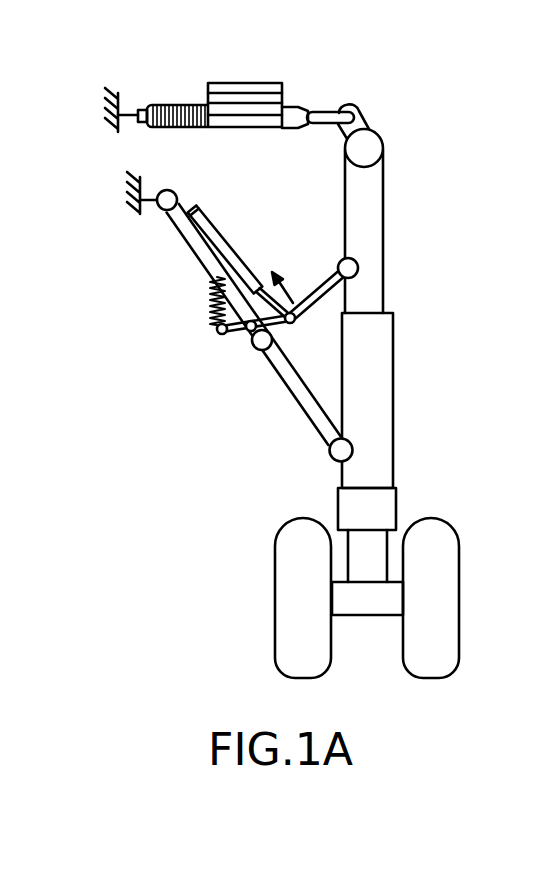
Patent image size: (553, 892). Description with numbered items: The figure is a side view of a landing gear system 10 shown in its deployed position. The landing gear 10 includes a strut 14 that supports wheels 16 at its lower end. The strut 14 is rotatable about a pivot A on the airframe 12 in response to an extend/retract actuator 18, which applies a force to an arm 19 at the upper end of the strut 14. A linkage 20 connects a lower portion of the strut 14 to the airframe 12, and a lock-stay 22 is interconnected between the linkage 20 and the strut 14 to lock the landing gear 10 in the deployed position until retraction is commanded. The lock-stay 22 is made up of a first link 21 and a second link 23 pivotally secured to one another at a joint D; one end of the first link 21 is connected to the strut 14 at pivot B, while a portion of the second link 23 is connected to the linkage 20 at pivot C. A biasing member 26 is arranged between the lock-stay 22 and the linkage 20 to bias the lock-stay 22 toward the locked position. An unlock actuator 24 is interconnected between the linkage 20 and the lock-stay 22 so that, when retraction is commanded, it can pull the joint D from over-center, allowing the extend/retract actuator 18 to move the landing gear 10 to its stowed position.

The landing gear system 10 is at (265, 460).
The airframe 12 is at (110, 131).
The strut 14 is at (387, 404).
The wheels 16 is at (452, 642).
The extend/retract actuator 18 is at (262, 84).
The arm 19 is at (360, 124).
The linkage 20 is at (285, 390).
The first link 21 is at (325, 266).
The lock-stay 22 is at (318, 276).
The second link 23 is at (292, 325).
The unlock actuator 24 is at (203, 231).
The biasing member 26 is at (210, 300).
The pivot A is at (384, 149).
The pivot B is at (358, 268).
The pivot C is at (243, 333).
The joint D is at (321, 300).